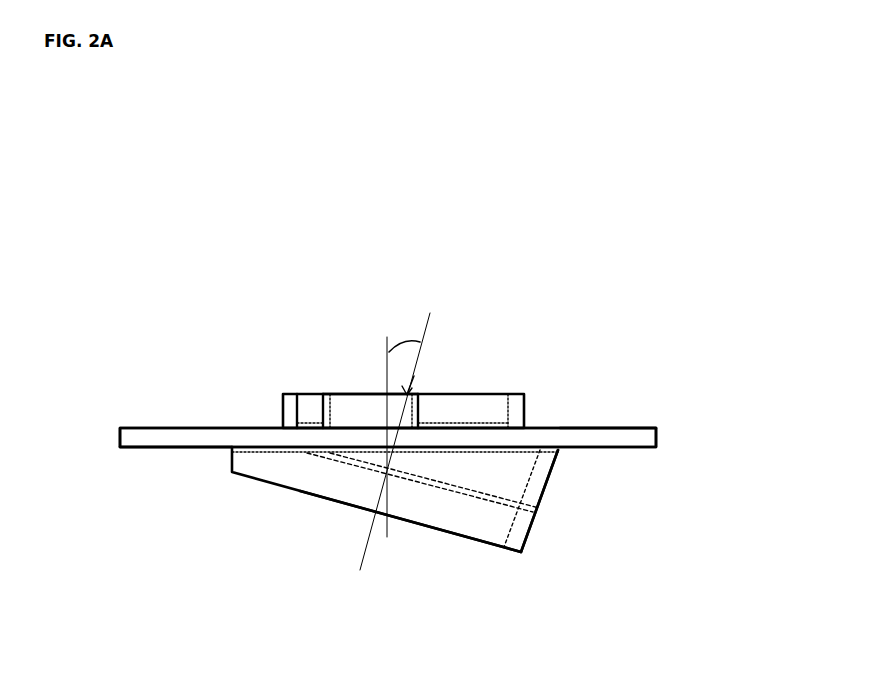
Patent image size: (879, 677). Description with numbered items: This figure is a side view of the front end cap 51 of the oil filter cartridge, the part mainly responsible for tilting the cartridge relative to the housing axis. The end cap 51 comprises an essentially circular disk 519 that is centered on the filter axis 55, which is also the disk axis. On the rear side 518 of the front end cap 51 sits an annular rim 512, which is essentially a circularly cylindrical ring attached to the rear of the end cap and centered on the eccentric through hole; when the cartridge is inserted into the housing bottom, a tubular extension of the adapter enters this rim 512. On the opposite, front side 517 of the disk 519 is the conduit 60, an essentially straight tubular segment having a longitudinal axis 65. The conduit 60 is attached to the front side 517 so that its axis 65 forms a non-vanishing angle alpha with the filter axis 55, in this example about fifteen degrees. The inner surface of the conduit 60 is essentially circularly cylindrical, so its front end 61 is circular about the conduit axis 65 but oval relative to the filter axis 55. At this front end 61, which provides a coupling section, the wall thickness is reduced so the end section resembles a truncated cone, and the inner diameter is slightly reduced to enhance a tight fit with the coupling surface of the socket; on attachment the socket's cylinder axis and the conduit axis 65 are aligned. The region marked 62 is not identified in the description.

The front end cap 51 is at (587, 284).
The annular rim 512 is at (278, 124).
The filter axis 55 is at (386, 346).
The longitudinal axis of the conduit 65 is at (420, 342).
The rear side 518 is at (208, 277).
The circular disk 519 is at (612, 434).
The front side 517 is at (151, 554).
The conduit 60 is at (513, 484).
The front end of the conduit 61 is at (482, 638).
The side wall 62 is at (557, 452).